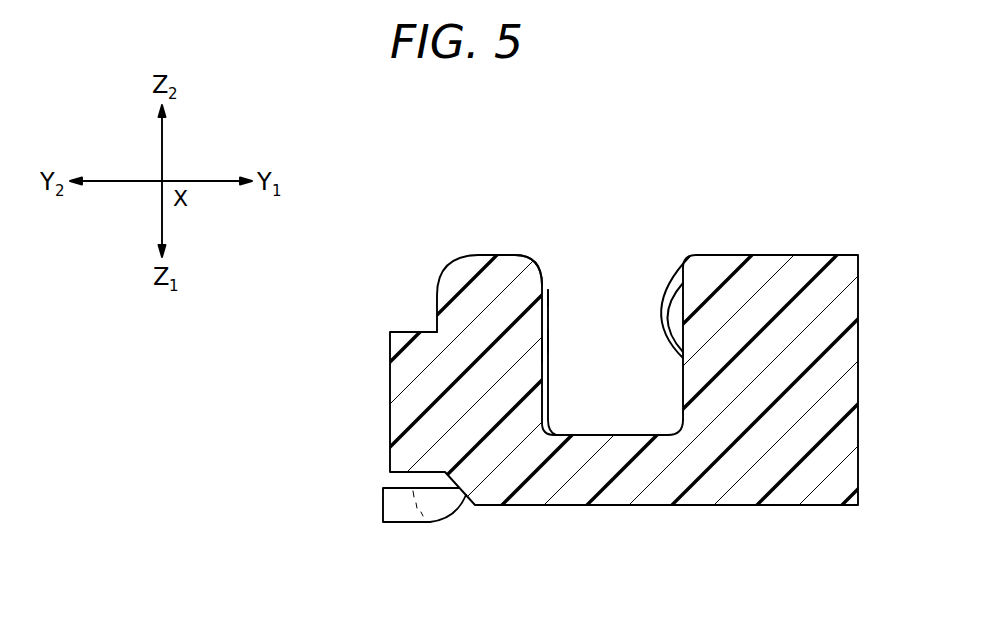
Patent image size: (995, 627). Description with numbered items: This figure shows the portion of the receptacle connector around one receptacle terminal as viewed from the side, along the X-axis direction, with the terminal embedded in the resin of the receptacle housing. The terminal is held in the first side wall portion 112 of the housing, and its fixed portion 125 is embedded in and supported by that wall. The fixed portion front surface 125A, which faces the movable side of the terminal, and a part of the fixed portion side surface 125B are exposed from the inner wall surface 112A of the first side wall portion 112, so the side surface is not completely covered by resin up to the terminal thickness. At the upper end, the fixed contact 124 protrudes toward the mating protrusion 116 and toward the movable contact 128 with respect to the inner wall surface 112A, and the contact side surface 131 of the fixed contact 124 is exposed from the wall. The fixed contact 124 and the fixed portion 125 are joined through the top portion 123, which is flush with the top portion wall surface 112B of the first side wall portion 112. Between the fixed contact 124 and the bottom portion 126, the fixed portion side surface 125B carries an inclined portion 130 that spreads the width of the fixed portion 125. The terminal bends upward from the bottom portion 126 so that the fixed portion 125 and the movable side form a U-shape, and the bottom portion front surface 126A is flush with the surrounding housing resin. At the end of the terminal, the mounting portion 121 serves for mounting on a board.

The first side wall portion 112 is at (433, 269).
The inner wall surface 112A is at (542, 266).
The top portion wall surface 112B is at (478, 256).
The mating protrusion 116 is at (821, 256).
The mounting portion 121 is at (400, 526).
The top portion 123 is at (495, 256).
The fixed contact 124 is at (557, 298).
The fixed portion 125 is at (564, 362).
The fixed portion front surface 125A is at (553, 341).
The fixed portion side surface 125B is at (545, 350).
The bottom portion 126 is at (636, 424).
The bottom portion front surface 126A is at (618, 433).
The movable contact 128 is at (657, 322).
The inclined portion 130 is at (550, 389).
The contact side surface 131 is at (552, 293).